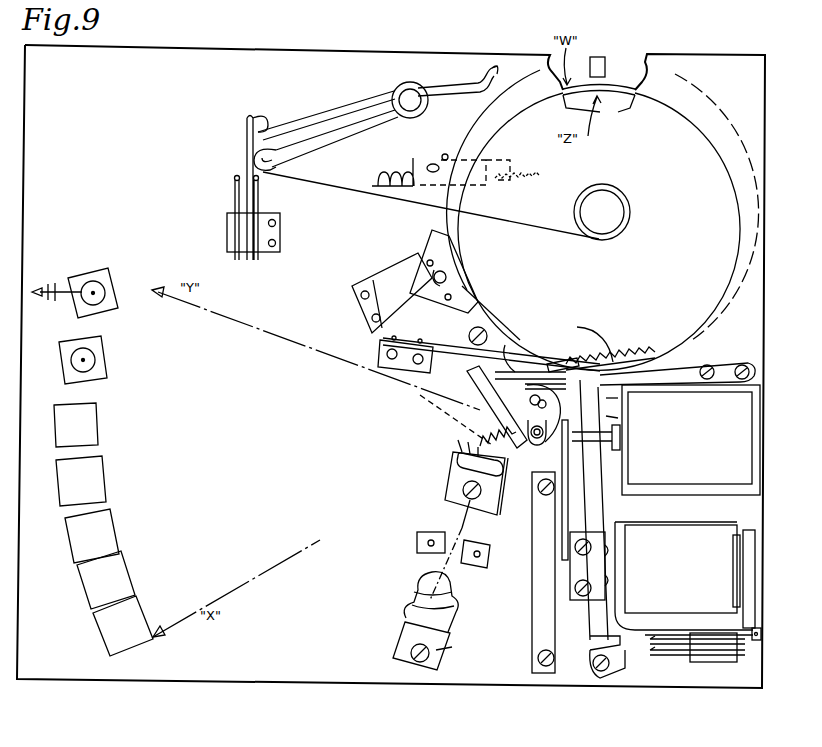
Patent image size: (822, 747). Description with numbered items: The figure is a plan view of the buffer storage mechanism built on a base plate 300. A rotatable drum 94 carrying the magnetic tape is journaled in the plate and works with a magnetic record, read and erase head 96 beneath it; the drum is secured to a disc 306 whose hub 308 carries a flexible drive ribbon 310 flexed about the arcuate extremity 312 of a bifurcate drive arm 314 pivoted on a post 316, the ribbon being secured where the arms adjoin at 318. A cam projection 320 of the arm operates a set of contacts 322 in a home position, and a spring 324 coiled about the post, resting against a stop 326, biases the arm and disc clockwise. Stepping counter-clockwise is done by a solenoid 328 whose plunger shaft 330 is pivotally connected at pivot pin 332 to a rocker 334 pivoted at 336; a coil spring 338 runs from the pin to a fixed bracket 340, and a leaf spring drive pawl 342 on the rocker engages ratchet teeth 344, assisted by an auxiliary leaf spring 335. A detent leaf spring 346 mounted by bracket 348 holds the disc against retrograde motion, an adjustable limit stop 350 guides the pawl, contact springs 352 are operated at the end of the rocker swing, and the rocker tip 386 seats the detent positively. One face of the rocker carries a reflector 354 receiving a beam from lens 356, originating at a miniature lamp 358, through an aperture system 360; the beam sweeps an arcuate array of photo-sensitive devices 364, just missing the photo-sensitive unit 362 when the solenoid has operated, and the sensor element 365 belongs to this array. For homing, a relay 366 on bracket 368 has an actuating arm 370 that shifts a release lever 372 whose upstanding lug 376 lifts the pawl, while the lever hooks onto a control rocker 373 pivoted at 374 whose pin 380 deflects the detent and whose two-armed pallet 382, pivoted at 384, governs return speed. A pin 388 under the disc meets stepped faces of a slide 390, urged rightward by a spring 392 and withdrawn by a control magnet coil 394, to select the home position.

The rotatable drum 94 is at (612, 110).
The magnetic record, read and erase head 96 is at (605, 67).
The base plate 300 is at (732, 66).
The disc 306 is at (718, 226).
The hub 308 is at (612, 203).
The flexible drive ribbon 310 is at (552, 229).
The arcuate extremity 312 is at (278, 160).
The drive arm 314 is at (345, 120).
The post 316 is at (428, 101).
The ribbon securing point 318 is at (285, 130).
The cam projection 320 is at (264, 118).
The set of contacts 322 is at (246, 162).
The spring 324 is at (445, 85).
The stop 326 is at (490, 68).
The solenoid 328 is at (728, 437).
The plunger shaft 330 is at (620, 437).
The pivot pin 332 is at (540, 446).
The rocker 334 is at (476, 380).
The auxiliary leaf spring 335 is at (618, 418).
The rocker pivot 336 is at (535, 399).
The coil spring 338 is at (480, 442).
The fixed bracket 340 is at (448, 484).
The leaf spring drive pawl 342 is at (618, 398).
The ratchet teeth 344 is at (634, 358).
The detent leaf spring 346 is at (566, 358).
The bracket 348 is at (396, 373).
The adjustable limit stop 350 is at (686, 366).
The contact springs 352 is at (538, 476).
The reflector 354 is at (476, 404).
The lens 356 is at (456, 468).
The miniature lamp 358 is at (448, 588).
The beam-defining slit or aperture system 360 is at (440, 560).
The photo-sensitive unit 362 is at (132, 635).
The photo-sensitive devices 364 is at (104, 378).
The sensor cell 365 is at (106, 286).
The relay 366 is at (698, 551).
The bracket 368 is at (606, 570).
The pivoted actuating arm 370 is at (690, 640).
The release lever 372 is at (604, 502).
The control rocker 373 is at (462, 286).
The pivot 374 is at (482, 330).
The upstanding lug 376 is at (587, 330).
The pin 380 is at (512, 342).
The two-armed pallet 382 is at (432, 246).
The pallet pivot 384 is at (416, 264).
The tip 386 is at (482, 352).
The pin 388 is at (482, 186).
The slide 390 is at (424, 158).
The spring 392 is at (530, 170).
The control magnet coil 394 is at (372, 178).